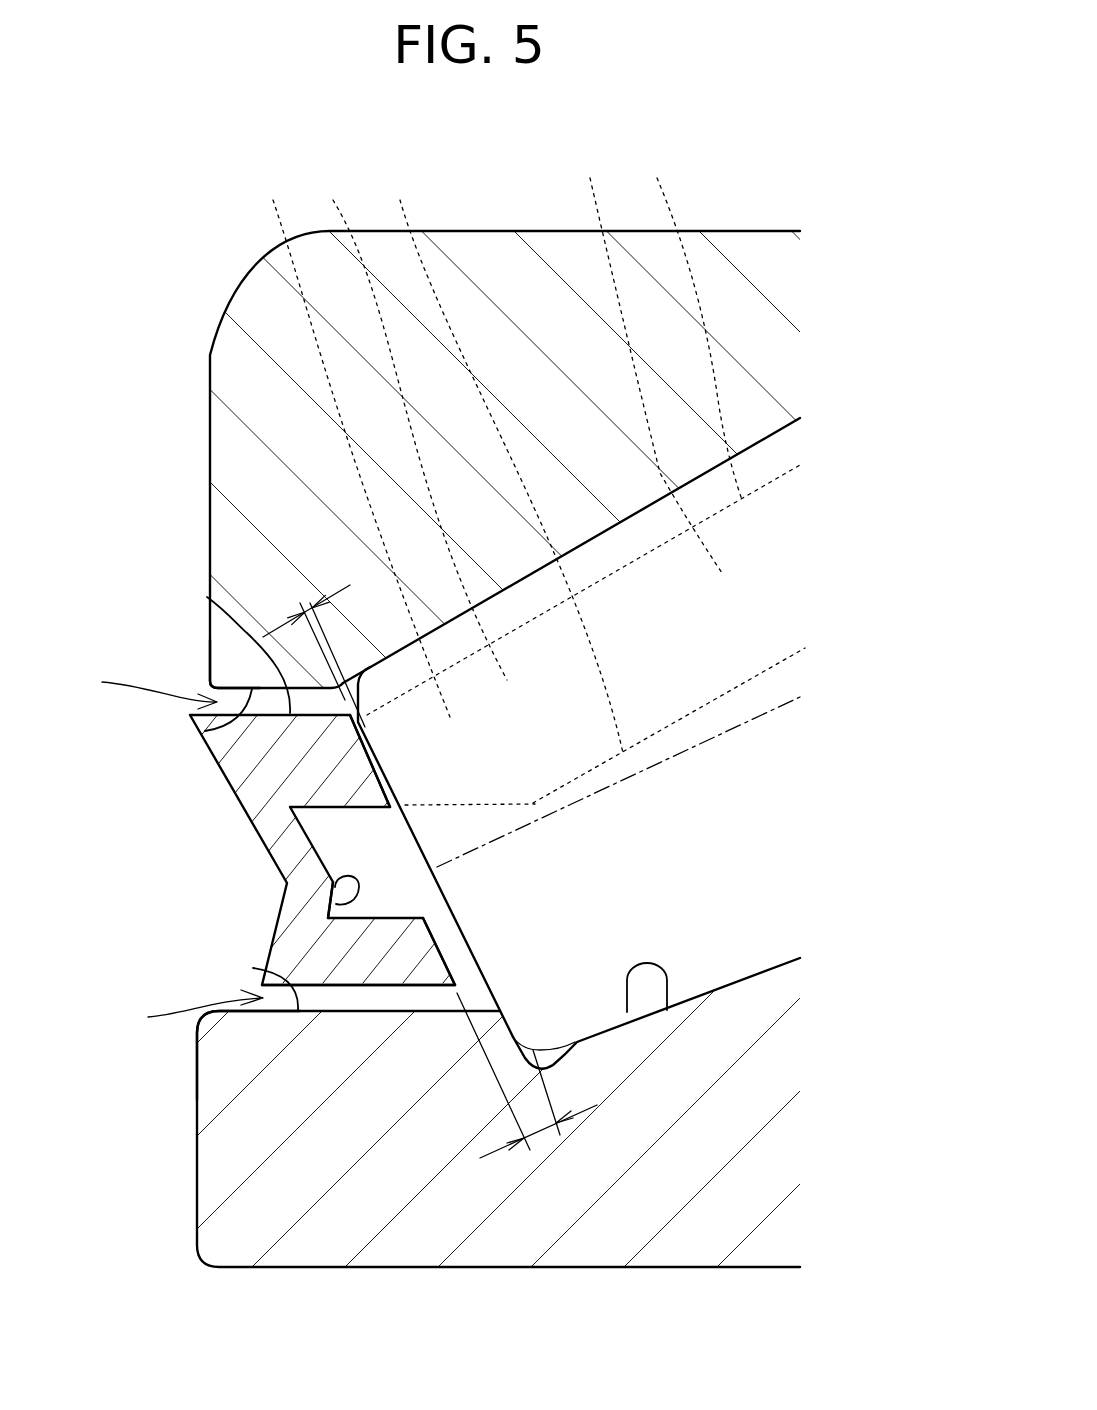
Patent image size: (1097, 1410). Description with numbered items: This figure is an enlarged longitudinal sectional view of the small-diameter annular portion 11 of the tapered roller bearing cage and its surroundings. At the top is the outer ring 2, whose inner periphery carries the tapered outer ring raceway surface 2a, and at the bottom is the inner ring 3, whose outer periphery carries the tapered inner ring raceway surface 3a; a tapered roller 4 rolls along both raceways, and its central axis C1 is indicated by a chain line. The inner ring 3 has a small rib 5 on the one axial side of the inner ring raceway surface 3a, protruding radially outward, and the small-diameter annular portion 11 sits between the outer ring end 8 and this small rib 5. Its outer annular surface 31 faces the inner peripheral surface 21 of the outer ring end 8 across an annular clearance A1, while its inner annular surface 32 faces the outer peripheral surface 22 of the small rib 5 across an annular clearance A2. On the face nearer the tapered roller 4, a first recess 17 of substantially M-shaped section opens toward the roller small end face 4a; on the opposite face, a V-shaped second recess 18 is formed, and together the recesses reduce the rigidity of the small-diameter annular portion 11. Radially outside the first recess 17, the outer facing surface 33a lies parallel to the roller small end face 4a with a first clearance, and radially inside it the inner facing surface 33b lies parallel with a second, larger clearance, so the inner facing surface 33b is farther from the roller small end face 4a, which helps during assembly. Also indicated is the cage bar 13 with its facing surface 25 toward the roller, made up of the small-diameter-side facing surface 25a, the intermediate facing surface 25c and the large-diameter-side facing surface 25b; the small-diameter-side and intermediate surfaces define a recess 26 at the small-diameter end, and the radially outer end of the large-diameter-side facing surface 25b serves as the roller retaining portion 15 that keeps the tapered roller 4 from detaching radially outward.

The outer ring 2 is at (548, 486).
The outer ring raceway surface 2a is at (760, 443).
The inner ring 3 is at (478, 1202).
The inner ring raceway surface 3a is at (667, 1010).
The tapered roller 4 is at (495, 1024).
The roller small end face 4a is at (420, 848).
The small rib 5 is at (253, 1037).
The outer ring end 8 is at (243, 657).
The small-diameter annular portion 11 is at (250, 758).
The cage bar 13 is at (645, 357).
The roller retaining portion 15 is at (690, 321).
The first recess 17 is at (333, 902).
The second recess 18 is at (287, 883).
The inner peripheral surface 21 is at (205, 731).
The outer peripheral surface 22 is at (253, 968).
The facing surface 25 is at (433, 178).
The small-diameter-side facing surface 25a is at (351, 443).
The large-diameter-side facing surface 25b is at (502, 461).
The intermediate facing surface 25c is at (413, 424).
The recess 26 is at (549, 751).
The outer annular surface 31 is at (207, 597).
The inner annular surface 32 is at (372, 988).
The outer facing surface 33a is at (380, 775).
The inner facing surface 33b is at (470, 943).
The annular clearance A1 is at (141, 689).
The annular clearance A2 is at (188, 1012).
The central axis C1 is at (727, 735).